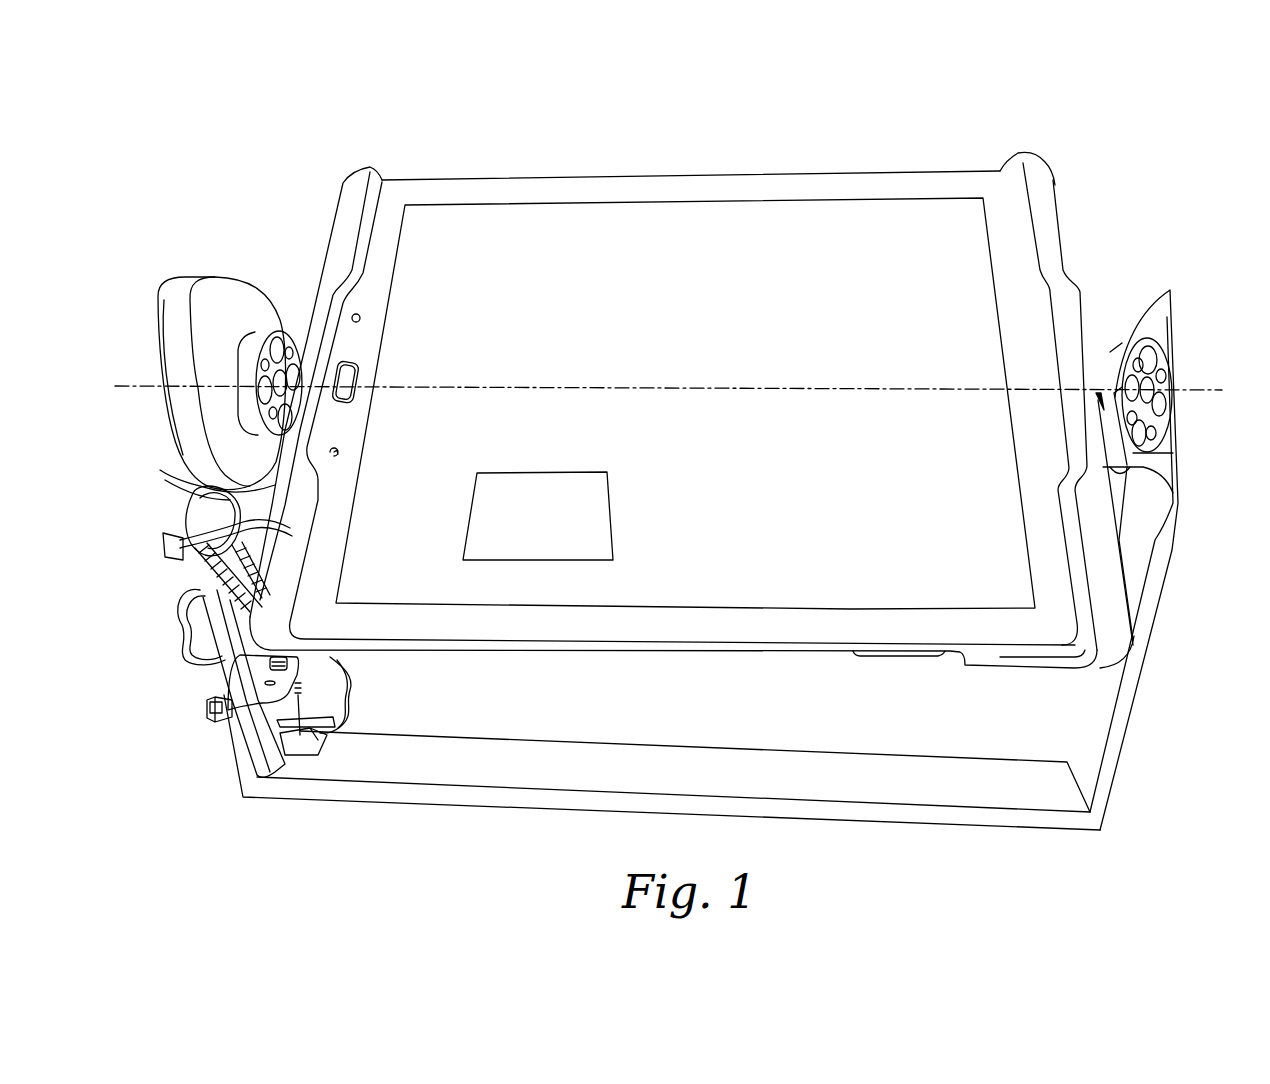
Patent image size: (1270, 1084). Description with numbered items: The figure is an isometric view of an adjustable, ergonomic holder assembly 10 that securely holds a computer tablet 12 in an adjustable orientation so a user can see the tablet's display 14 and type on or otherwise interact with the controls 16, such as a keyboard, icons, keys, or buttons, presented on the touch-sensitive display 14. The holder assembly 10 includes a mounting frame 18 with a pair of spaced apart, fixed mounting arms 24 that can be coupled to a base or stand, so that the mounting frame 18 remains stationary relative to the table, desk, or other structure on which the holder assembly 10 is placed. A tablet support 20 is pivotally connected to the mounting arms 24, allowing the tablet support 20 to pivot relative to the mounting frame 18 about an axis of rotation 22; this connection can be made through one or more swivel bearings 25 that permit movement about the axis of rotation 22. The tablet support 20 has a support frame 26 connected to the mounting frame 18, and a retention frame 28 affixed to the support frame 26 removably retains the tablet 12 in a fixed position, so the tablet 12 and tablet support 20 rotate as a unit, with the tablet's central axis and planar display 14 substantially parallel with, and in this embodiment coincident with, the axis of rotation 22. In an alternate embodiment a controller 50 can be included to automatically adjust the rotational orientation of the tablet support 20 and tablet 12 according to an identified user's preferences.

The holder assembly 10 is at (1122, 138).
The computer tablet 12 is at (818, 190).
The display 14 is at (705, 345).
The controls 16 is at (533, 514).
The mounting frame 18 is at (1118, 763).
The tablet support 20 is at (1165, 338).
The axis of rotation 22 is at (1220, 390).
The mounting arms 24 is at (1153, 580).
The swivel bearings 25 is at (1167, 457).
The support frame 26 is at (1098, 395).
The retention frame 28 is at (1037, 183).
The controller 50 is at (168, 483).